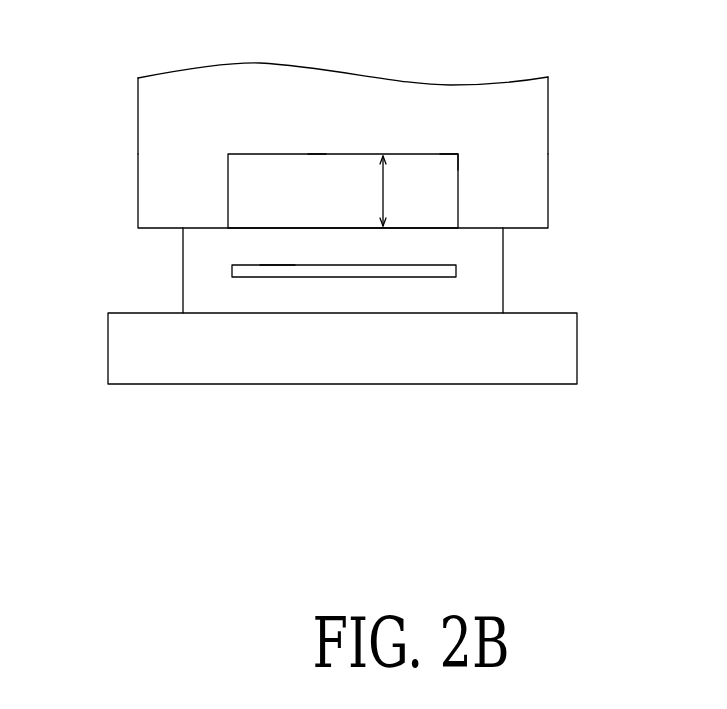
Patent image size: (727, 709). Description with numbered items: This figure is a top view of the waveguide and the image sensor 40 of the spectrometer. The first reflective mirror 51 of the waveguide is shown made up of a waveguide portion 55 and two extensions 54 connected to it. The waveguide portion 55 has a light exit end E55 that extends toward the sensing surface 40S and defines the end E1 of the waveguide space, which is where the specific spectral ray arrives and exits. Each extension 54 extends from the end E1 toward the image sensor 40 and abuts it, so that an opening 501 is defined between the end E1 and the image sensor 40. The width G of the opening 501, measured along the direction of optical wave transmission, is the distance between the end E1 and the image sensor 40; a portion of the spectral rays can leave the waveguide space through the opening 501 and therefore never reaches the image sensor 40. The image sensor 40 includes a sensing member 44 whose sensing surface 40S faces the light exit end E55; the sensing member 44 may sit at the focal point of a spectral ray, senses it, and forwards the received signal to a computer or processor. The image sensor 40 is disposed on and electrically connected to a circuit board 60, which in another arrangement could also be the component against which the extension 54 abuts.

The first reflective mirror 51 is at (70, 93).
The waveguide portion 55 is at (245, 121).
The extension 54 is at (176, 192).
The opening 501 is at (346, 192).
The width of the opening G is at (383, 190).
The end of the waveguide space E1 is at (444, 157).
The light exit end E55 is at (317, 157).
The image sensor 40 is at (503, 281).
The sensing surface 40S is at (277, 262).
The sensing member 44 is at (427, 277).
The circuit board 60 is at (558, 352).